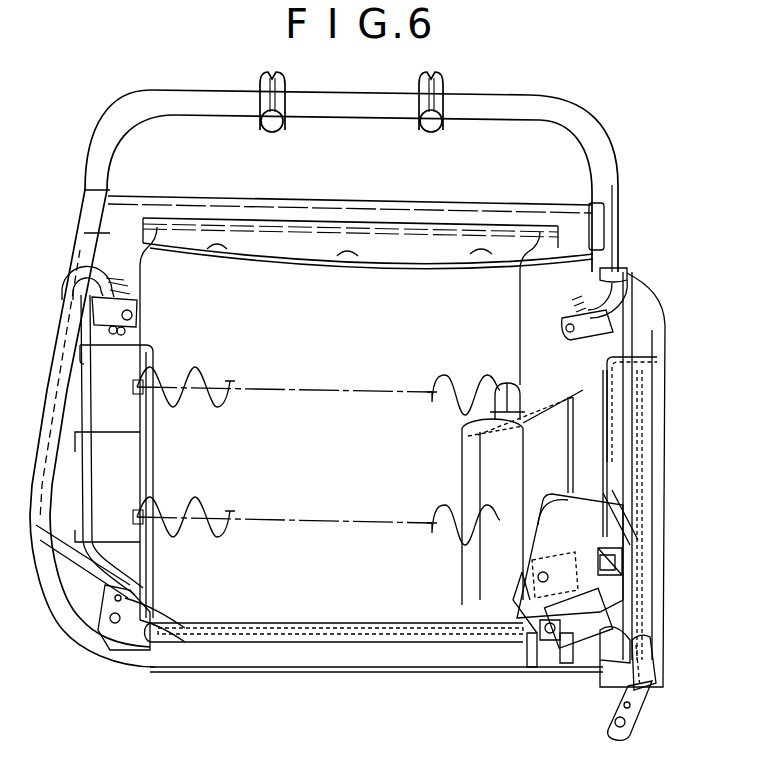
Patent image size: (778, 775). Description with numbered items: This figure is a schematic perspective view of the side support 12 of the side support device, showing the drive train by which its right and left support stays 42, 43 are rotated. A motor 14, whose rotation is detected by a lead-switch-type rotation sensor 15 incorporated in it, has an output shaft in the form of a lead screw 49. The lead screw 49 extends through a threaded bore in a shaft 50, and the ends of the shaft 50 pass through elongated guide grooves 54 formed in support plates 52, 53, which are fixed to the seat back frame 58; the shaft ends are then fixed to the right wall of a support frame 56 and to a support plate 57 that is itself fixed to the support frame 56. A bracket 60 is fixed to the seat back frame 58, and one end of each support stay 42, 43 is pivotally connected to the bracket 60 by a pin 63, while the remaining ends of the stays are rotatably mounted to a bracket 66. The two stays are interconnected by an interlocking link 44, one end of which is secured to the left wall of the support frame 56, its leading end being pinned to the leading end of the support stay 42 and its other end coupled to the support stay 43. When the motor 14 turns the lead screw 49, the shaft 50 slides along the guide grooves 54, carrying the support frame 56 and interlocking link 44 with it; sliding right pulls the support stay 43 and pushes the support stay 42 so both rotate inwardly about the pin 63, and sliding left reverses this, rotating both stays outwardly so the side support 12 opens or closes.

The side support 12 is at (673, 330).
The motor 14 is at (514, 460).
The rotation sensor 15 is at (490, 413).
The support stay 42 is at (626, 297).
The support stay 43 is at (62, 290).
The interlocking link 44 is at (320, 623).
The output shaft (lead screw) 49 is at (522, 572).
The shaft 50 is at (547, 503).
The support plate 52 is at (620, 542).
The support plate 53 is at (615, 563).
The elongated guide grooves 54 is at (607, 502).
The support frame 56 is at (554, 497).
The support plate 57 is at (612, 568).
The seat back frame 58 is at (607, 175).
The bracket 60 is at (114, 652).
The pin 63 is at (96, 648).
The bracket 66 is at (111, 311).